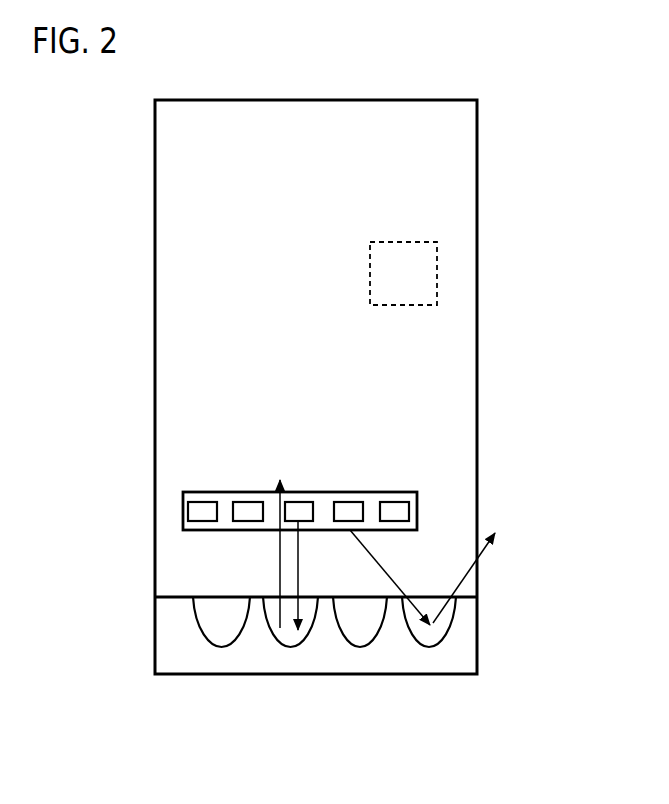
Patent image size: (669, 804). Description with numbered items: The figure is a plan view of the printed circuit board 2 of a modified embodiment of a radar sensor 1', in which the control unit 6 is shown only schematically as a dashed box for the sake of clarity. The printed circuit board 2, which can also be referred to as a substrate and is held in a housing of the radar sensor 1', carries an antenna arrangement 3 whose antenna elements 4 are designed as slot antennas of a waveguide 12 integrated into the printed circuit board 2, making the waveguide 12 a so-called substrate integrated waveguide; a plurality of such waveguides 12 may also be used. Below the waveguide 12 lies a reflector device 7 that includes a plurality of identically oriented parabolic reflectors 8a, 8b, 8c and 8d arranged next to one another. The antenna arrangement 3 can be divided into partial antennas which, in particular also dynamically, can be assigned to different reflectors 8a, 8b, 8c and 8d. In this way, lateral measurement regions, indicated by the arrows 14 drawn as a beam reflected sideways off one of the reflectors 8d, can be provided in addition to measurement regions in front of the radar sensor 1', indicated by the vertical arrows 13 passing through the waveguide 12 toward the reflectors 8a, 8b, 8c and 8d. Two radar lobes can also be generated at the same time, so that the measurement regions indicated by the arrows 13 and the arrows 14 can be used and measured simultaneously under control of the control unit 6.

The radar sensor 1' is at (356, 427).
The printed circuit board 2 is at (155, 268).
The antenna arrangement 3 is at (429, 504).
The antenna elements 4 is at (252, 502).
The control unit 6 is at (437, 272).
The reflector device 7 is at (478, 655).
The parabolic reflector 8a is at (221, 648).
The parabolic reflector 8b is at (290, 648).
The parabolic reflector 8c is at (360, 648).
The parabolic reflector 8d is at (428, 648).
The waveguide 12 is at (372, 492).
The arrows 13 is at (278, 565).
The arrows 14 is at (383, 568).